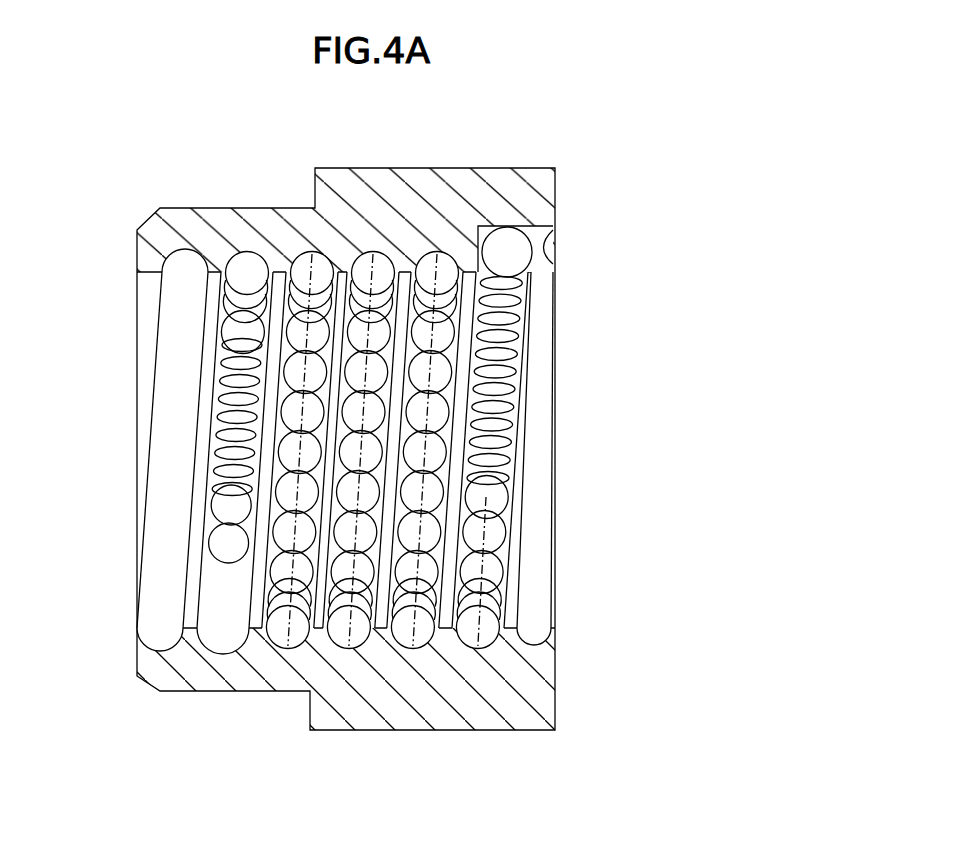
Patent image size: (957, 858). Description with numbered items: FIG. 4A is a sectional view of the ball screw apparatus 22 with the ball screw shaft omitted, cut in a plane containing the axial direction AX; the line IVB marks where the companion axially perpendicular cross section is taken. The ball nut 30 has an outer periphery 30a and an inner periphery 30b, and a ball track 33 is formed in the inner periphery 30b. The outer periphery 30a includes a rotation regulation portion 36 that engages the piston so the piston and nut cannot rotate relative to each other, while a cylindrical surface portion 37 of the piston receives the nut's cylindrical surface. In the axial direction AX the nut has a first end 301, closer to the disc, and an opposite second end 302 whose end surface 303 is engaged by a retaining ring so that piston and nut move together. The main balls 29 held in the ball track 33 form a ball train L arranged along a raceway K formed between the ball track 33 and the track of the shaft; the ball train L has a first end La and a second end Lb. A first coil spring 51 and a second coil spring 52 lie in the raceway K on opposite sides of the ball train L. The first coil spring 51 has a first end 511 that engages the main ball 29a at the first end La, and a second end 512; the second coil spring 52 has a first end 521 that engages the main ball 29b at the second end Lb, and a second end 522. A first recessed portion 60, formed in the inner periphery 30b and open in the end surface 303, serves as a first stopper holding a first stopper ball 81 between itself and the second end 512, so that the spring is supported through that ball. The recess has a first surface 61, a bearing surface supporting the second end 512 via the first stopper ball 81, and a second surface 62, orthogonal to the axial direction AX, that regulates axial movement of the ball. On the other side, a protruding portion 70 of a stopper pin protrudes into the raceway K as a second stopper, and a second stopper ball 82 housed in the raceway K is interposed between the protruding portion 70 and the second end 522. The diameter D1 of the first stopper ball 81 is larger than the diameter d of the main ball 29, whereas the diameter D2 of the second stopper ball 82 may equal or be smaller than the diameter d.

The ball screw apparatus 22 is at (567, 672).
The ball nut 30 is at (558, 712).
The outer periphery 30a is at (380, 170).
The inner periphery 30b is at (185, 612).
The first end 301 is at (147, 233).
The second end 302 is at (545, 182).
The end surface 303 is at (556, 202).
The ball track 33 is at (262, 655).
The rotation regulation portion 36 is at (208, 208).
The cylindrical surface portion 37 is at (337, 170).
The main balls 29 is at (307, 262).
The main ball at the first end of the ball train 29a is at (500, 512).
The main ball at the second end of the ball train 29b is at (232, 328).
The first coil spring 51 is at (516, 375).
The first end of the first coil spring 511 is at (508, 493).
The second end of the first coil spring 512 is at (508, 280).
The second coil spring 52 is at (222, 396).
The first end of the second coil spring 521 is at (224, 342).
The second end of the second coil spring 522 is at (240, 500).
The first recessed portion 60 is at (557, 243).
The first surface 61 is at (556, 257).
The second surface 62 is at (482, 232).
The protruding portion 70 is at (220, 543).
The first stopper ball 81 is at (502, 248).
The second stopper ball 82 is at (222, 503).
The diameter of the main ball d is at (328, 261).
The diameter of the first stopper ball D1 is at (483, 252).
The diameter of the second stopper ball D2 is at (220, 500).
The raceway K is at (210, 600).
The ball train L is at (436, 655).
The first end of the ball train La is at (505, 500).
The second end of the ball train Lb is at (242, 349).
The axial direction AX is at (657, 467).
The line IVB- IVB is at (507, 100).